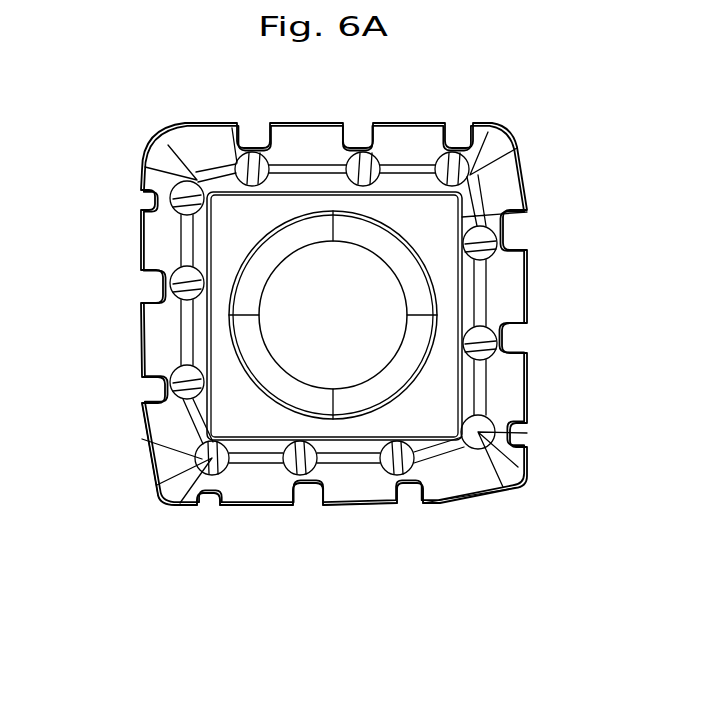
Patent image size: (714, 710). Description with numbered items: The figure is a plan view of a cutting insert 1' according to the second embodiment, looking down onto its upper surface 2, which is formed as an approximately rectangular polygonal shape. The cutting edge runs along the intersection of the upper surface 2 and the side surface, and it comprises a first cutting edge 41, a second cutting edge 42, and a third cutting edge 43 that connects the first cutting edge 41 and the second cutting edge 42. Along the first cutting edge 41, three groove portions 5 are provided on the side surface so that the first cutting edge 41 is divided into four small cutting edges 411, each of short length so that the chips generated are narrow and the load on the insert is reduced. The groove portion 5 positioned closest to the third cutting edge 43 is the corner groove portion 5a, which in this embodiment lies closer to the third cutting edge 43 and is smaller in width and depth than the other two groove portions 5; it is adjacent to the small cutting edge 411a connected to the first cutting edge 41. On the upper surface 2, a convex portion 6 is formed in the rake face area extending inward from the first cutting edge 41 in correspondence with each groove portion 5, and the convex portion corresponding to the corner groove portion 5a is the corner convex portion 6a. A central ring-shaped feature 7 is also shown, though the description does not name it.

The insert 1' is at (337, 346).
The upper surface 2 is at (498, 176).
The annular portion 7 is at (440, 295).
The convex portion 6 is at (240, 447).
The corner convex portion 6a is at (142, 439).
The second cutting edge 42 is at (172, 464).
The third cutting edge 43 is at (165, 505).
The first cutting edge 41 is at (327, 568).
The small cutting edge 411 is at (265, 505).
The small cutting edge 411a is at (187, 506).
The groove portion 5 is at (304, 490).
The corner groove portion 5a is at (212, 500).